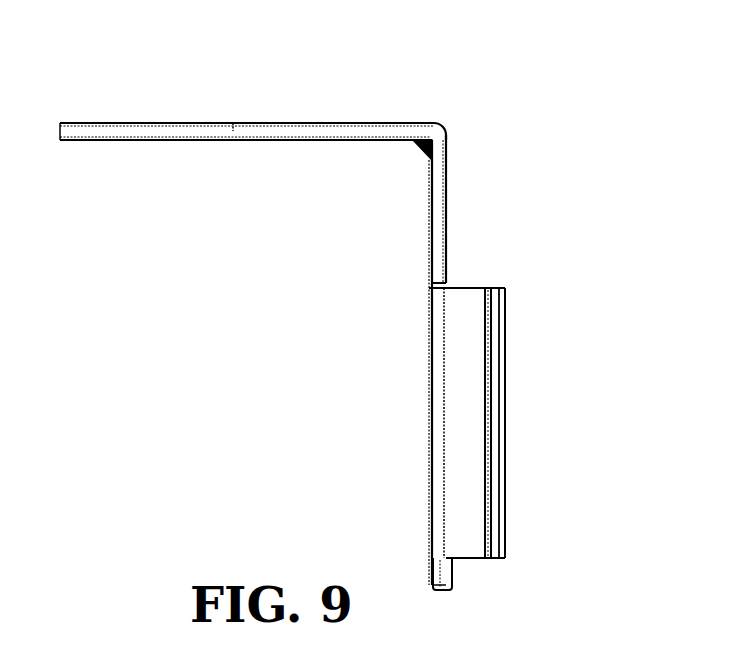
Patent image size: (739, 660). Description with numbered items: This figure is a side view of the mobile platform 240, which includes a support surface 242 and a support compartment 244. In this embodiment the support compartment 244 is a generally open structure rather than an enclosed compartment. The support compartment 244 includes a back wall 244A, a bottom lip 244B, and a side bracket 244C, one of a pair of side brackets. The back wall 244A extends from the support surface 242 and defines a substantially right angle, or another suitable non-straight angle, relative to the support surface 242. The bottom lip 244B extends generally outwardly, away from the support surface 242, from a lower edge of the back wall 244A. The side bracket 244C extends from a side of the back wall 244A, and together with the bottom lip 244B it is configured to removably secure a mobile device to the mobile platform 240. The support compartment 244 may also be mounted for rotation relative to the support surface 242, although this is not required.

The mobile platform 240 is at (556, 80).
The support surface 242 is at (138, 133).
The support compartment 244 is at (508, 224).
The back wall 244A is at (446, 199).
The bottom lip 244B is at (452, 568).
The side bracket 244C is at (465, 427).